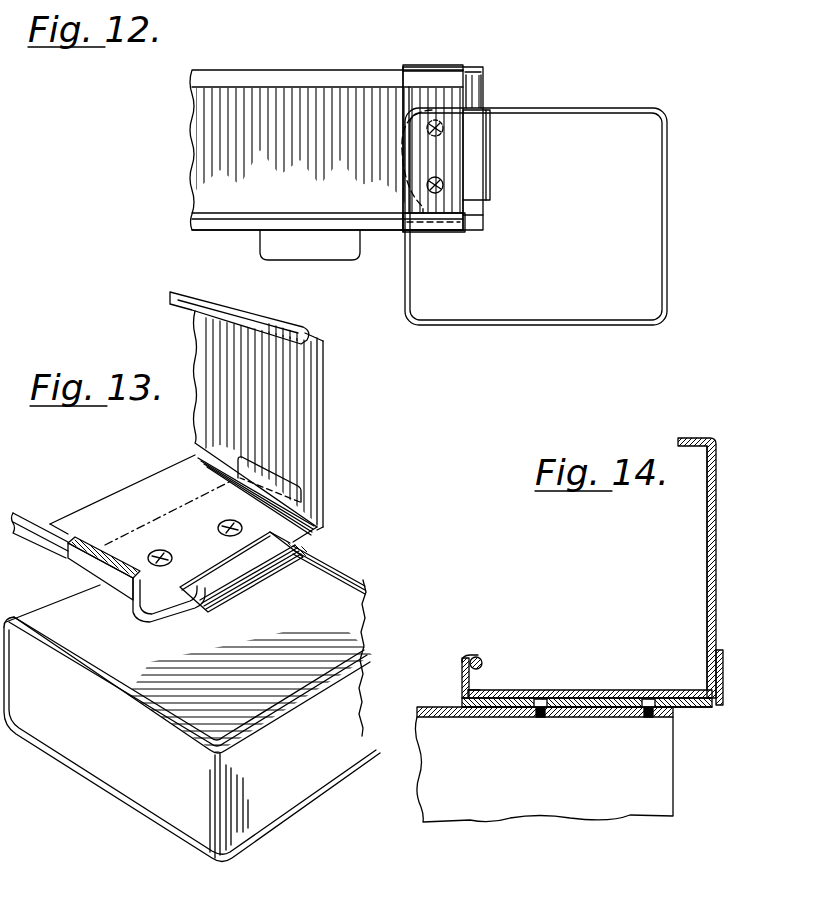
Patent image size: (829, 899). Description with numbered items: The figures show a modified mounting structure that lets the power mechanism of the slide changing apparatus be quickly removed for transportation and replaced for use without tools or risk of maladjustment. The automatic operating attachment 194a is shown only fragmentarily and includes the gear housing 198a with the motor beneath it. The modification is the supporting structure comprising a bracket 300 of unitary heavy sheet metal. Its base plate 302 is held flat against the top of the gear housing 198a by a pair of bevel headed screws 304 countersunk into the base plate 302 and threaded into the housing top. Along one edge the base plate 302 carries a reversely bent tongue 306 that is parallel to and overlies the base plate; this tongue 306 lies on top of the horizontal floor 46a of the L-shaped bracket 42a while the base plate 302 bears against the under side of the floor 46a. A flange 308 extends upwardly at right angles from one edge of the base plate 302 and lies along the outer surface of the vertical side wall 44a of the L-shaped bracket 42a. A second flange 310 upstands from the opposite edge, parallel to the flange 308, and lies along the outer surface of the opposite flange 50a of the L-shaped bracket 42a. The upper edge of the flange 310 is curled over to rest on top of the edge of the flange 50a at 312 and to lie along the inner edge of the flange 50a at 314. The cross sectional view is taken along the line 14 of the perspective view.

In FIG. 13, the section line 14 is at (372, 447).
In FIG. 12, the L-shaped bracket 42a is at (383, 70).
In FIG. 13, the L-shaped bracket 42a is at (306, 381).
In FIG. 14, the L-shaped bracket 42a is at (725, 575).
In FIG. 14, the vertical side wall 44a is at (717, 528).
In FIG. 12, the horizontal floor 46a is at (450, 97).
In FIG. 13, the horizontal floor 46a is at (303, 544).
In FIG. 14, the horizontal floor 46a is at (593, 693).
In FIG. 12, the flange 50a is at (372, 228).
In FIG. 13, the flange 50a is at (50, 533).
In FIG. 14, the flange 50a is at (480, 672).
In FIG. 12, the automatic operating attachment 194a is at (491, 336).
In FIG. 13, the automatic operating attachment 194a is at (137, 816).
In FIG. 14, the automatic operating attachment 194a is at (685, 806).
In FIG. 12, the gear housing 198a is at (640, 295).
In FIG. 13, the gear housing 198a is at (347, 593).
In FIG. 14, the gear housing 198a is at (648, 787).
In FIG. 12, the bracket 300 is at (492, 172).
In FIG. 13, the bracket 300 is at (237, 605).
In FIG. 14, the bracket 300 is at (727, 700).
In FIG. 12, the base plate 302 is at (486, 216).
In FIG. 13, the base plate 302 is at (310, 527).
In FIG. 14, the base plate 302 is at (588, 708).
In FIG. 12, the bevel headed screws 304 is at (428, 180).
In FIG. 13, the bevel headed screws 304 is at (220, 523).
In FIG. 14, the bevel headed screws 304 is at (543, 717).
In FIG. 12, the reversely bent tongue 306 is at (473, 140).
In FIG. 13, the reversely bent tongue 306 is at (260, 553).
In FIG. 12, the flange 308 is at (455, 66).
In FIG. 13, the flange 308 is at (310, 473).
In FIG. 14, the flange 308 is at (724, 672).
In FIG. 12, the flange 310 is at (447, 238).
In FIG. 13, the flange 310 is at (85, 565).
In FIG. 14, the flange 310 is at (462, 683).
In FIG. 12, the curled over upper edge 312 is at (430, 230).
In FIG. 13, the curled over upper edge 312 is at (104, 552).
In FIG. 14, the curled over upper edge 312 is at (472, 657).
In FIG. 12, the curled edge portion 314 is at (387, 161).
In FIG. 14, the curled edge portion 314 is at (486, 661).